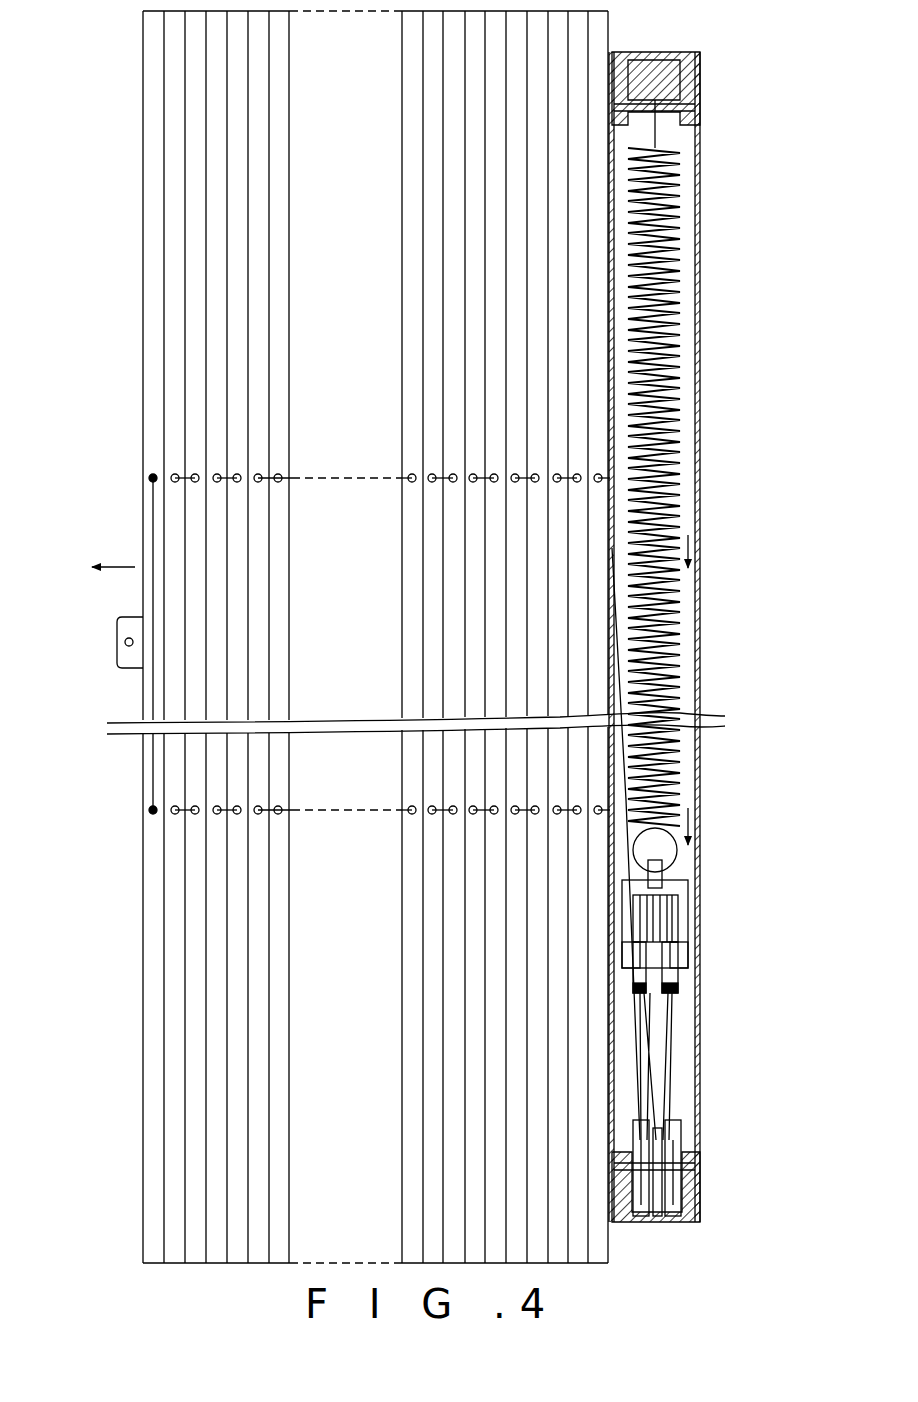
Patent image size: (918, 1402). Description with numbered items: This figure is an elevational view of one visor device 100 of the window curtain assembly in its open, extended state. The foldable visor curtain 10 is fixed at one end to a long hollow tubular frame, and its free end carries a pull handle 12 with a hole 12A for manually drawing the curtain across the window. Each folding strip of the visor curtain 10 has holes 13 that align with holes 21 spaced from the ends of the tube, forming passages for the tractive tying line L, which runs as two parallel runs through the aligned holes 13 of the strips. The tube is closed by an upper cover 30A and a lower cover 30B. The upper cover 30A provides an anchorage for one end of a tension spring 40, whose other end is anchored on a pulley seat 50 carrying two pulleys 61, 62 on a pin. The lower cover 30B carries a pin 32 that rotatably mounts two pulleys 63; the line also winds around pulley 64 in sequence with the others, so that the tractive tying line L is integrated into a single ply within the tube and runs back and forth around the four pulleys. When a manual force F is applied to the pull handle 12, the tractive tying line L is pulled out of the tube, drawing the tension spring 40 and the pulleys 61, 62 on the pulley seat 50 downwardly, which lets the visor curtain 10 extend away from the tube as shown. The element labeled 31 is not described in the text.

The foldable visor curtain 10 is at (147, 75).
The visor device 100 is at (108, 159).
The holes 13 is at (153, 478).
The manual force F is at (113, 549).
The pull handle 12 is at (128, 656).
The hole 12A is at (126, 640).
The tractive tying line L is at (153, 782).
The upper cover 30A is at (700, 54).
The upper support bar 31 is at (662, 108).
The lower cover 30B is at (700, 1220).
The pin 32 is at (690, 1167).
The tension spring 40 is at (700, 306).
The holes 21 is at (626, 782).
The pulley seat 50 is at (684, 890).
The pulley 61 is at (690, 950).
The pulley 62 is at (674, 987).
The pulley 64 is at (678, 1123).
The pulleys 63 is at (690, 1145).